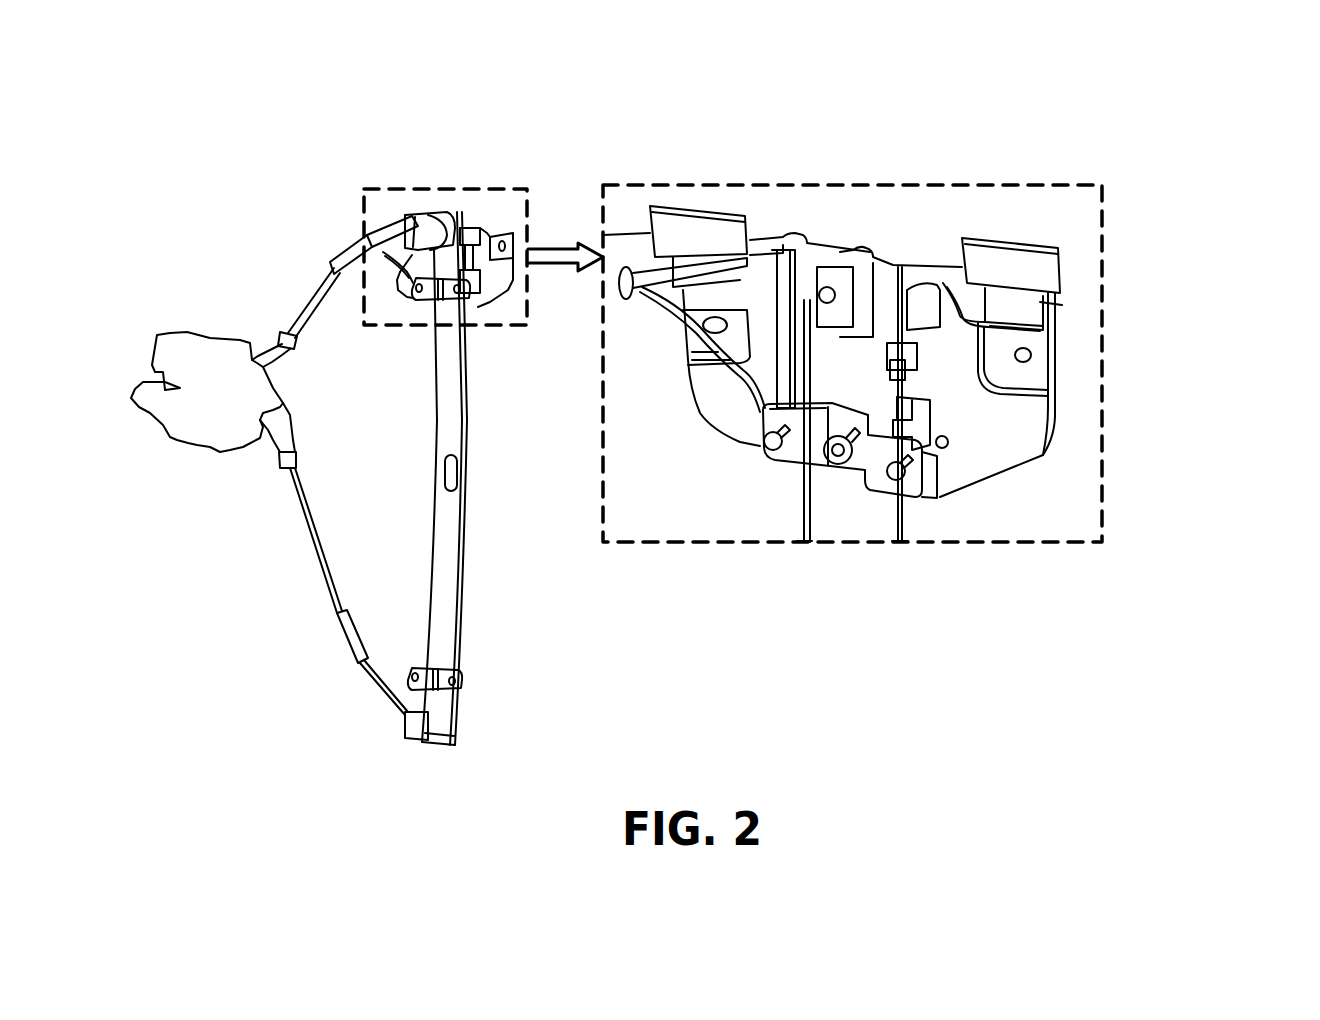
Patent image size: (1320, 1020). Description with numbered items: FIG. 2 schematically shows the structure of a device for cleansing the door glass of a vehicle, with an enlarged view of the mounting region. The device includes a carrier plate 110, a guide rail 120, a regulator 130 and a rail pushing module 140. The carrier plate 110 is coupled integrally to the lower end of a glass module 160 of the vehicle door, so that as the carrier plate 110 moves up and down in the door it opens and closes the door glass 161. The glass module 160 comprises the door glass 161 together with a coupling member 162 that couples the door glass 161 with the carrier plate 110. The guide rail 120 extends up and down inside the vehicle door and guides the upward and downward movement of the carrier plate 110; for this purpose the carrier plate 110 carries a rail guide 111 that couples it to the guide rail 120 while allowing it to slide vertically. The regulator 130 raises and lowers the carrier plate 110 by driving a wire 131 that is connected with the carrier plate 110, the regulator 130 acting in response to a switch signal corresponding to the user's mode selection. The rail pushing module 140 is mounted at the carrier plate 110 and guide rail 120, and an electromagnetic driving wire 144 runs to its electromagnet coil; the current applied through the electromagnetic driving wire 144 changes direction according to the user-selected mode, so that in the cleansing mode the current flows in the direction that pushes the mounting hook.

The carrier plate 110 is at (500, 228).
The rail guide 111 is at (913, 383).
The guide rail 120 is at (453, 595).
The regulator 130 is at (210, 445).
The wire 131 is at (400, 225).
The rail pushing module 140 is at (475, 303).
The electromagnetic driving wire 144 is at (400, 266).
The glass module 160 is at (976, 281).
The door glass 161 is at (1077, 245).
The coupling member 162 is at (1062, 305).